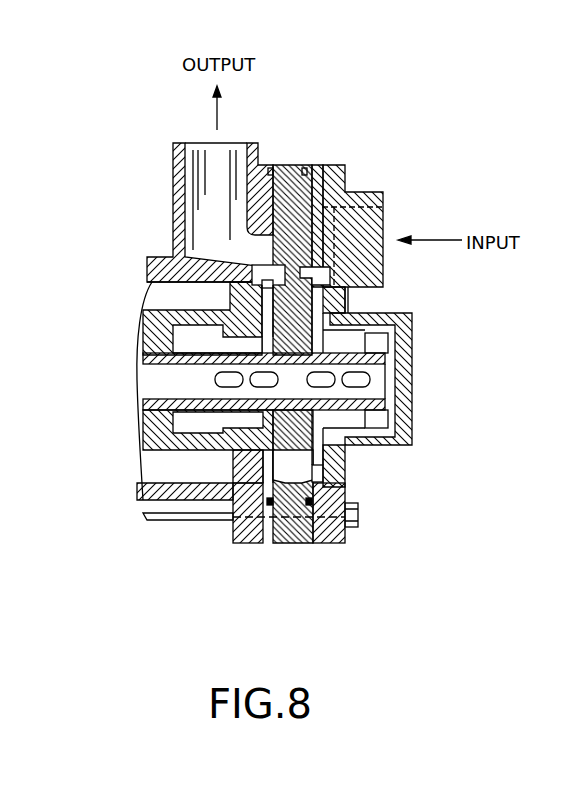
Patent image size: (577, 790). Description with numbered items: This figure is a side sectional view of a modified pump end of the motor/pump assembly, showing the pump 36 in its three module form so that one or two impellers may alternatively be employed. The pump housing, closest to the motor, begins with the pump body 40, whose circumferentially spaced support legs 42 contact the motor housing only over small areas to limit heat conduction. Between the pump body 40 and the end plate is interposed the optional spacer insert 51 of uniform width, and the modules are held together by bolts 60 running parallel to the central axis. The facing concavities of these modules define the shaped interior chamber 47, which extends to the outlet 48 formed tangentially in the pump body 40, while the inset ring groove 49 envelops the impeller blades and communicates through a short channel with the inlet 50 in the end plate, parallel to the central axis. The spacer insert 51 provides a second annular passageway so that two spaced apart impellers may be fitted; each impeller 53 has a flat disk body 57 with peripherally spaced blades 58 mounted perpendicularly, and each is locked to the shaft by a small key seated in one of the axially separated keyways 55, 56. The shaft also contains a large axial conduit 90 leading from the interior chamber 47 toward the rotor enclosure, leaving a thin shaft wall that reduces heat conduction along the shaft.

The pump 36 is at (259, 585).
The pump body 40 is at (233, 540).
The support legs 42 is at (150, 526).
The interior chamber 47 is at (386, 337).
The outlet 48 is at (195, 142).
The ring groove 49 is at (268, 168).
The inlet 50 is at (378, 190).
The spacer insert 51 is at (302, 166).
The impeller 53 is at (240, 462).
The keyway 55 is at (148, 366).
The keyway 56 is at (368, 378).
The flat disk body 57 is at (316, 313).
The blades 58 is at (347, 290).
The bolts 60 is at (193, 520).
The axial conduit 90 is at (217, 373).